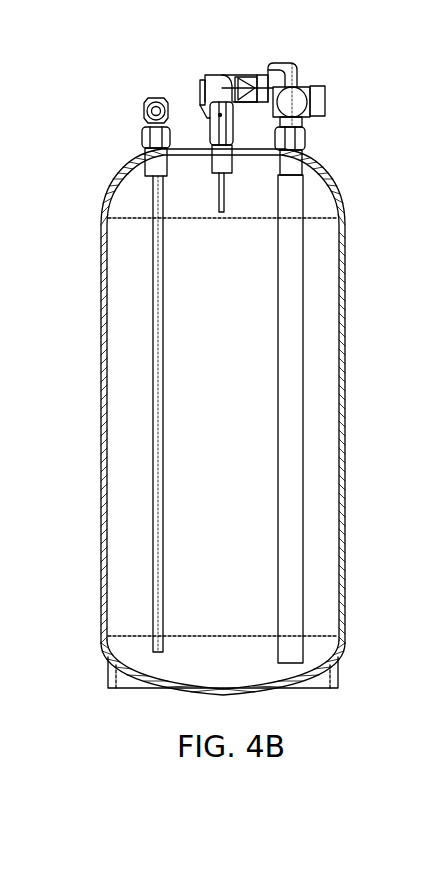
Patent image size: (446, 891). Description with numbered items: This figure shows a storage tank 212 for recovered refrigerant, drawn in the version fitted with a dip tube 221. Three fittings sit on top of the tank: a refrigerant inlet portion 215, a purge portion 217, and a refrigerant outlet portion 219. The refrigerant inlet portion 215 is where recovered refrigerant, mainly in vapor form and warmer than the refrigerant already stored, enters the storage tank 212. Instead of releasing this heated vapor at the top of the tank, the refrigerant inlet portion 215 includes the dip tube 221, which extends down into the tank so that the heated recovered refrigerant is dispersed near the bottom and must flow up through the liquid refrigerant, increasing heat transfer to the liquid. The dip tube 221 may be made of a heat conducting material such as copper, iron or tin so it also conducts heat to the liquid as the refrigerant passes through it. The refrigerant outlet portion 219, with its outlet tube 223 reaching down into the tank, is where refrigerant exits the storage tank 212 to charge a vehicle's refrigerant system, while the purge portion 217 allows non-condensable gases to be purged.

The storage tank 212 is at (101, 381).
The refrigerant inlet portion 215 is at (144, 108).
The purge portion 217 is at (207, 74).
The refrigerant outlet portion 219 is at (297, 67).
The dip tube 221 is at (162, 280).
The outlet tube 223 is at (278, 443).